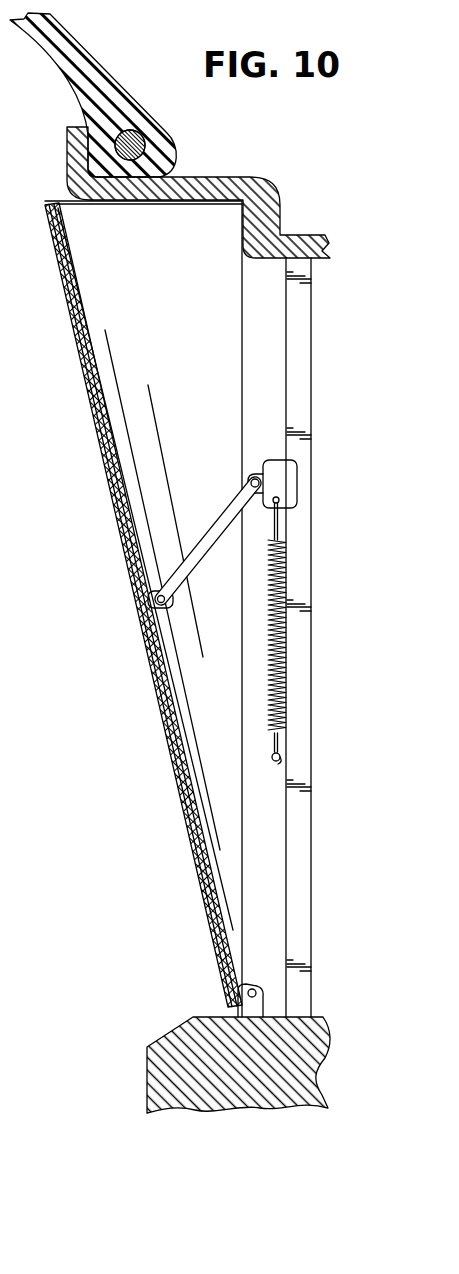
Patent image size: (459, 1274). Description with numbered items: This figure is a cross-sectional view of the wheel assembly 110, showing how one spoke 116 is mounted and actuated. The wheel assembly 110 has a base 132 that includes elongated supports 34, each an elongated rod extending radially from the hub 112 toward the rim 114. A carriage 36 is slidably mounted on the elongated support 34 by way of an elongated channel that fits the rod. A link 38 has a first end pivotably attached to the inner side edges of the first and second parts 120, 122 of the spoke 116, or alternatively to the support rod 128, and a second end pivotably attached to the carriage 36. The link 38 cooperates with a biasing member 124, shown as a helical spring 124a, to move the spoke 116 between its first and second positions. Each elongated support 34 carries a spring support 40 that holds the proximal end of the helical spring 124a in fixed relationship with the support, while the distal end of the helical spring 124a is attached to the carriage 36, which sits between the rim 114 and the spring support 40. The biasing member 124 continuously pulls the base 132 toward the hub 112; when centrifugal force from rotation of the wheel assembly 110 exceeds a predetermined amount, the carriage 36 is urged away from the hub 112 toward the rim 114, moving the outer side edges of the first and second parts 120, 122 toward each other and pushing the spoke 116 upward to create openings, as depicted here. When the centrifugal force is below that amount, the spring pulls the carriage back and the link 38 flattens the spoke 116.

The wheel assembly 110 is at (53, 559).
The hub 112 is at (172, 1028).
The rim 114 is at (237, 186).
The spoke 116 is at (46, 401).
The first part 120 is at (172, 770).
The second part 122 is at (159, 712).
The support rod 128 is at (149, 662).
The carriage 36 is at (265, 470).
The link 38 is at (216, 517).
The biasing member 124 is at (349, 627).
The helical spring 124a is at (288, 563).
The spring support 40 is at (277, 763).
The elongated support 34 is at (312, 698).
The base 132 is at (343, 843).